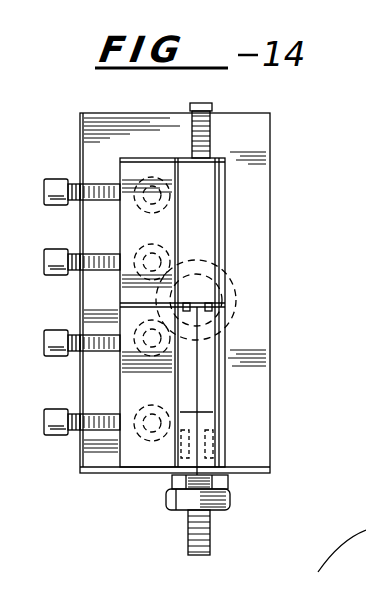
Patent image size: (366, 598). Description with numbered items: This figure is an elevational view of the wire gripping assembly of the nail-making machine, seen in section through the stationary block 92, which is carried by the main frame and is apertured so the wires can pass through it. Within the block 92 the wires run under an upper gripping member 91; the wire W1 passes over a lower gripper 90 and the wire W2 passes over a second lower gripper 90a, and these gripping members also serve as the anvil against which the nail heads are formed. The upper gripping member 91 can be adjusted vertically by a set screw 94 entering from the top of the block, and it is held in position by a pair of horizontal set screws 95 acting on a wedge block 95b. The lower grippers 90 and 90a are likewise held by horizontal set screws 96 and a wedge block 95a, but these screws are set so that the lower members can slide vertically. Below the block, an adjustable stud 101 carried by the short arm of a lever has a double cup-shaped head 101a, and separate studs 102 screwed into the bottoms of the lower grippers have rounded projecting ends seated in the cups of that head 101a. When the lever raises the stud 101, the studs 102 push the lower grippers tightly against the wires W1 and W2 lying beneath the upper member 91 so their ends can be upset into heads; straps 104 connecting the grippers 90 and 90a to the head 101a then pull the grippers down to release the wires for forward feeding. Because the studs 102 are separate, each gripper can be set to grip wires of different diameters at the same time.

The gripper 90 is at (222, 370).
The gripper 90a is at (208, 405).
The gripping member 91 is at (205, 207).
The stationary block 92 is at (262, 130).
The set screw 94 is at (206, 112).
The horizontal set screws 95 is at (44, 252).
The wedge block 95a is at (140, 455).
The wedge block 95b is at (118, 303).
The horizontal set screws 96 is at (46, 352).
The adjustable stud 101 is at (210, 552).
The double cup-shaped head 101a is at (228, 505).
The studs 102 is at (230, 482).
The straps 104 is at (215, 434).
The wire W1 is at (230, 288).
The wire W2 is at (230, 318).